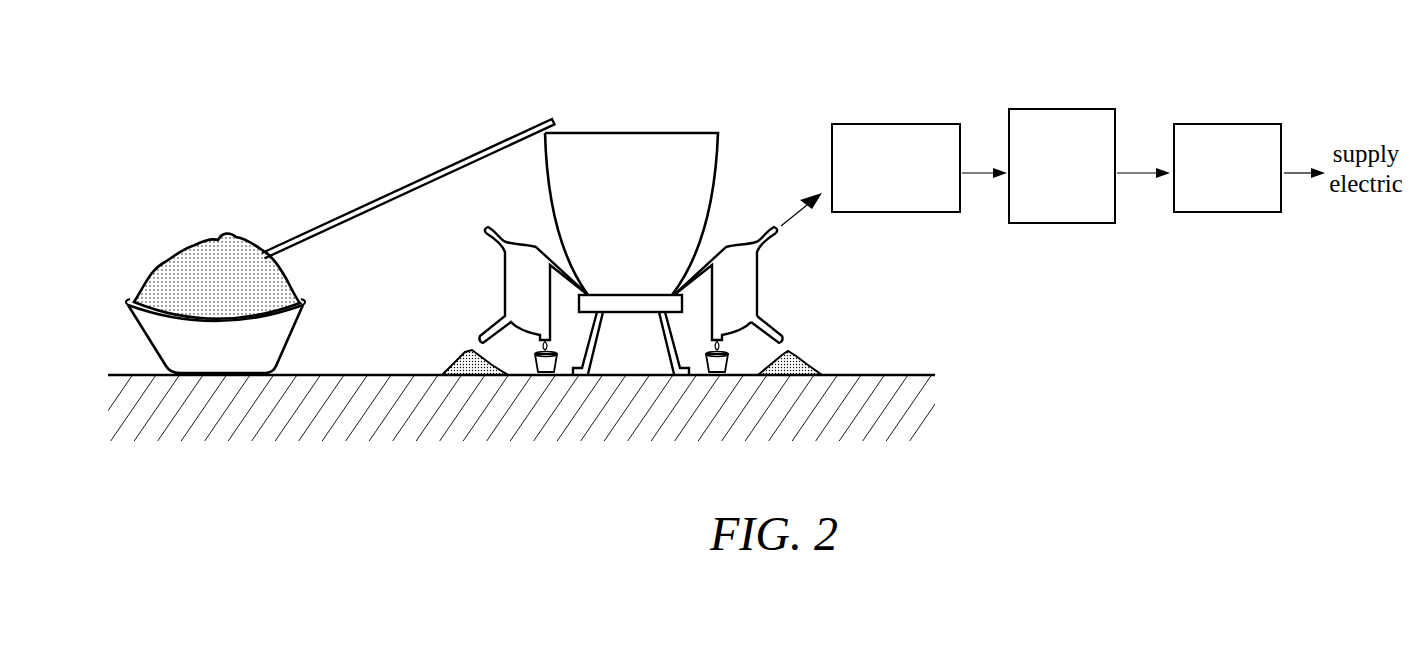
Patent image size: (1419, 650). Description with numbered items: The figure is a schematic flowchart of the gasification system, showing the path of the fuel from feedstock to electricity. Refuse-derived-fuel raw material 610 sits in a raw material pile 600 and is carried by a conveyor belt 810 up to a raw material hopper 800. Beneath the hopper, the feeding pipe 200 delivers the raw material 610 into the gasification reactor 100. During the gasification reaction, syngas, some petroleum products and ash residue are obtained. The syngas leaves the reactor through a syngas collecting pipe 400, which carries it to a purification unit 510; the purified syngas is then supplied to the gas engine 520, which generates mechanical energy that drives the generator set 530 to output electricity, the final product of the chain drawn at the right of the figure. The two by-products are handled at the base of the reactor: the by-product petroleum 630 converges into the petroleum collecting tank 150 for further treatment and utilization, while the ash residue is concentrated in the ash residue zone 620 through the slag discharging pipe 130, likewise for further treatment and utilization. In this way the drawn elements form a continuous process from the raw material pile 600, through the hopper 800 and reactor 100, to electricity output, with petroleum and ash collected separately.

The gasification reactor 100 is at (668, 311).
The slag discharging pipe 130 is at (786, 331).
The petroleum collecting tank 150 is at (706, 378).
The feeding pipe 200 is at (705, 258).
The syngas collecting pipe 400 is at (766, 288).
The purification unit 510 is at (879, 128).
The gas engine 520 is at (1058, 115).
The generator set 530 is at (1222, 130).
The raw material pile 600 is at (150, 345).
The RDF-5 raw material 610 is at (188, 262).
The ash residue zone 620 is at (802, 357).
The by-product petroleum 630 is at (716, 348).
The raw material hopper 800 is at (628, 145).
The conveyor belt 810 is at (408, 185).